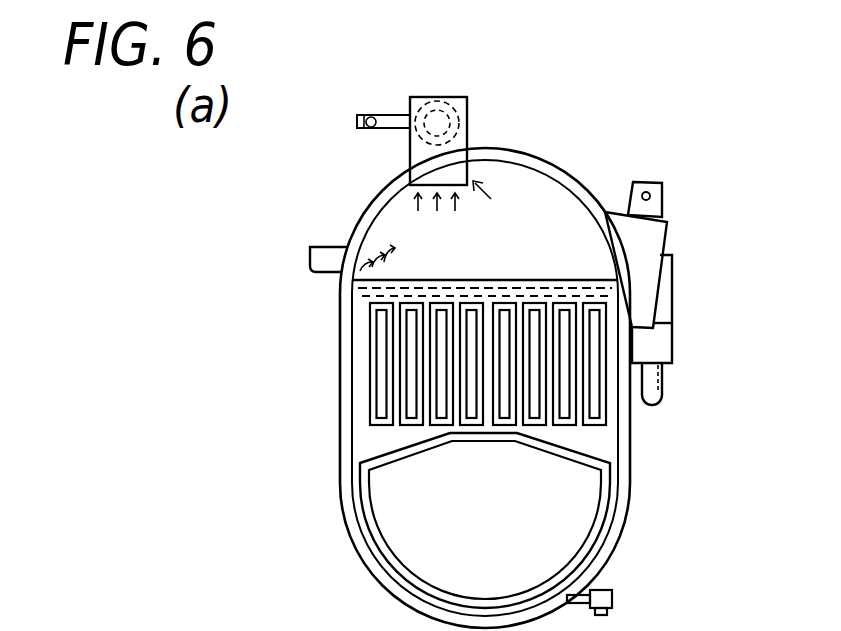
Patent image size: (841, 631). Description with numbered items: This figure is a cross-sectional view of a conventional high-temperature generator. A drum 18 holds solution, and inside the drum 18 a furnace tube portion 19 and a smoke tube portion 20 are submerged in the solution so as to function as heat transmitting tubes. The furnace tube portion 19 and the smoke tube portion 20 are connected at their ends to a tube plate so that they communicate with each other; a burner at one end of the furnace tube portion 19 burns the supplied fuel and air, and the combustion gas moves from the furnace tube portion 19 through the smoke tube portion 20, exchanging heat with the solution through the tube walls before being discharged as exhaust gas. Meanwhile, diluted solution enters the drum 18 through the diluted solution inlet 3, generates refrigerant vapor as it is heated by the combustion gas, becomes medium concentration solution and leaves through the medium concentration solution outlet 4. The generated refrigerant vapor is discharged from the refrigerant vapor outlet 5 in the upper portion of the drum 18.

The diluted solution inlet 3 is at (323, 248).
The medium concentration solution outlet 4 is at (665, 387).
The refrigerant vapor outlet 5 is at (468, 100).
The drum 18 is at (342, 337).
The furnace tube portion 19 is at (358, 492).
The smoke tube portion 20 is at (370, 405).